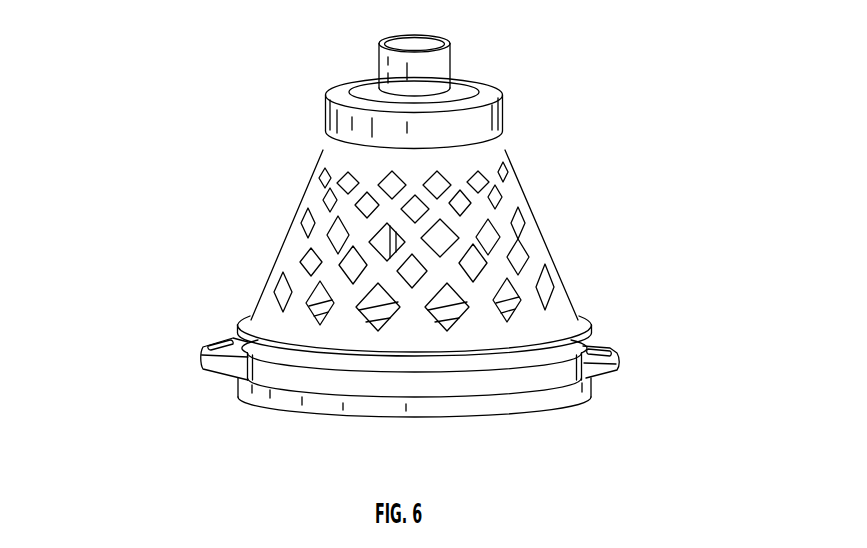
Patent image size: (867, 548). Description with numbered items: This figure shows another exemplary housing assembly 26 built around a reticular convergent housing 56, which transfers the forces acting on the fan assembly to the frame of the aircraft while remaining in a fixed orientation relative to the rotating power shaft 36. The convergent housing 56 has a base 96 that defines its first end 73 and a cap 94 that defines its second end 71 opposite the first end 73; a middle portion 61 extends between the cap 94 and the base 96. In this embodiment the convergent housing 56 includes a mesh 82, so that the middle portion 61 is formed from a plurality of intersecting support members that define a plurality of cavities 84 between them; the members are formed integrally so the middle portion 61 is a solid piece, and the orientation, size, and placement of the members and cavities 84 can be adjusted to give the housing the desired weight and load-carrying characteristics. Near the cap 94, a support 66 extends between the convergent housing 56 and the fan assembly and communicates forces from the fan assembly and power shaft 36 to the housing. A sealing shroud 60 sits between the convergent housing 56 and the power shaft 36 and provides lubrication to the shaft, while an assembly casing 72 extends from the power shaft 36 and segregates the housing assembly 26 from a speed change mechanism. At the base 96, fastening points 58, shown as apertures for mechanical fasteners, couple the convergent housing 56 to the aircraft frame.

The housing assembly 26 is at (140, 72).
The power shaft 36 is at (453, 62).
The convergent housing 56 is at (553, 260).
The fastening point 58 is at (203, 362).
The sealing shroud 60 is at (456, 232).
The middle portion 61 is at (274, 187).
The support 66 is at (503, 115).
The second end 71 is at (351, 140).
The assembly casing 72 is at (558, 406).
The first end 73 is at (312, 370).
The mesh 82 is at (450, 246).
The cavities 84 is at (296, 258).
The cap 94 is at (322, 153).
The base 96 is at (587, 318).